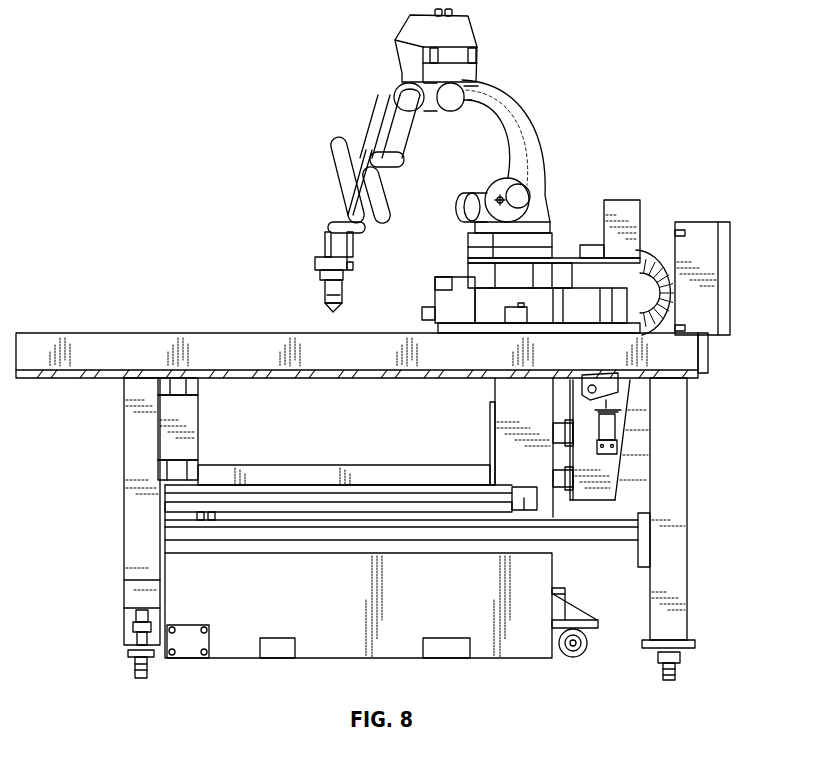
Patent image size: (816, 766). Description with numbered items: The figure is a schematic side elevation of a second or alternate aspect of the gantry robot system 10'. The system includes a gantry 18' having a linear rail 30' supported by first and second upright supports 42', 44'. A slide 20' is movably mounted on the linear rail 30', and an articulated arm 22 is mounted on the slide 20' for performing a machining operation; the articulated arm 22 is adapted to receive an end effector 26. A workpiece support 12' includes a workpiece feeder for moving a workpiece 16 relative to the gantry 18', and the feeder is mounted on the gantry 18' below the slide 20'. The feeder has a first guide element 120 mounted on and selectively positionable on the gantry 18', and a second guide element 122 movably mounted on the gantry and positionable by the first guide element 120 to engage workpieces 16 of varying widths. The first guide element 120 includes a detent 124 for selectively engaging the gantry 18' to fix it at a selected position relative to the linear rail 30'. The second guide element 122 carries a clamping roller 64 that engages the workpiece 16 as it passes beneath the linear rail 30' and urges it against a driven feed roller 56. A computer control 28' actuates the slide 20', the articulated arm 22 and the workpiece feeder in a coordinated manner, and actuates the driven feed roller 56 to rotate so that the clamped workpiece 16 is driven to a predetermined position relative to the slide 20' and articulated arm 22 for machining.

The gantry robot system 10' is at (444, 406).
The workpiece support 12' is at (684, 440).
The workpiece 16 is at (220, 472).
The gantry 18' is at (397, 355).
The slide 20' is at (515, 267).
The articulated arm 22 is at (538, 115).
The end effector 26 is at (327, 282).
The computer control 28' is at (704, 260).
The linear rail 30' is at (734, 370).
The first upright support 42' is at (114, 528).
The second upright support 44' is at (690, 529).
The driven feed roller 56 is at (163, 433).
The clamping roller 64 is at (490, 418).
The first guide element 120 is at (613, 470).
The second guide element 122 is at (507, 447).
The detent 124 is at (640, 400).